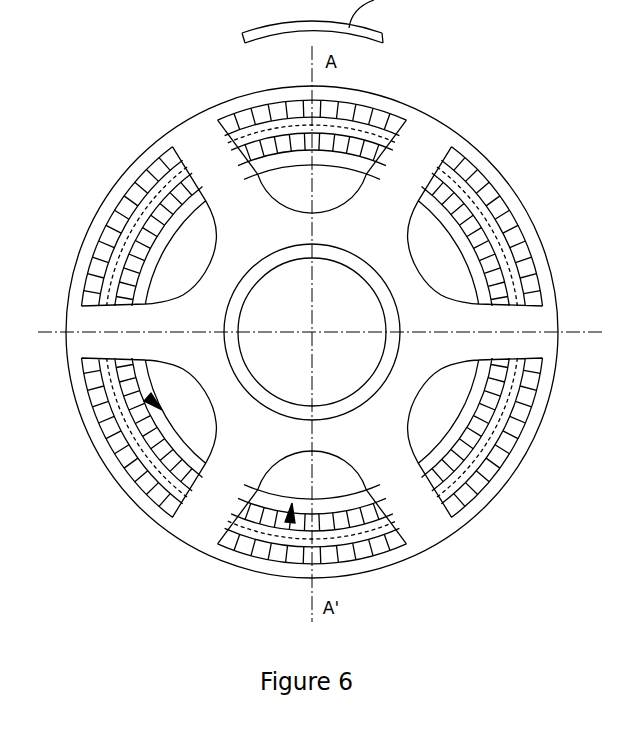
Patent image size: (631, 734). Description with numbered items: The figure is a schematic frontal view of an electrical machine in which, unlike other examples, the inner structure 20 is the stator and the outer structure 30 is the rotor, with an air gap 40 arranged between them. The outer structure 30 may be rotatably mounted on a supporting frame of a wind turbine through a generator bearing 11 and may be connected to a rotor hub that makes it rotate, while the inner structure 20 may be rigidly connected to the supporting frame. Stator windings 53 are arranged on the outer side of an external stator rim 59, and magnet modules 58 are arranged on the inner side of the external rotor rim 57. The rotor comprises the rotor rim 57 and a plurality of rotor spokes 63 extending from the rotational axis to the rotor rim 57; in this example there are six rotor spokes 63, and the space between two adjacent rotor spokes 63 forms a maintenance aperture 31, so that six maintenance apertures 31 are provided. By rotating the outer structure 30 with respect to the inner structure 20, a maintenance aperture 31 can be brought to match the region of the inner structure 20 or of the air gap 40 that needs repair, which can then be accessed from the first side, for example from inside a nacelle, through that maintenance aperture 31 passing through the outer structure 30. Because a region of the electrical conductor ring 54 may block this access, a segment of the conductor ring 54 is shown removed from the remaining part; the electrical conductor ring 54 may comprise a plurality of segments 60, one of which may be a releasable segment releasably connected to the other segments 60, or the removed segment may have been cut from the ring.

The generator bearing 11 is at (390, 380).
The inner structure 20 is at (437, 228).
The outer structure 30 is at (430, 535).
The maintenance aperture 31 is at (150, 402).
The air gap 40 is at (255, 115).
The stator windings 53 is at (163, 463).
The electrical conductor ring 54 is at (512, 255).
The rotor rim 57 is at (114, 203).
The magnet modules 58 is at (96, 258).
The external stator rim 59 is at (167, 228).
The segments 60 is at (372, 118).
The rotor spokes 63 is at (394, 188).